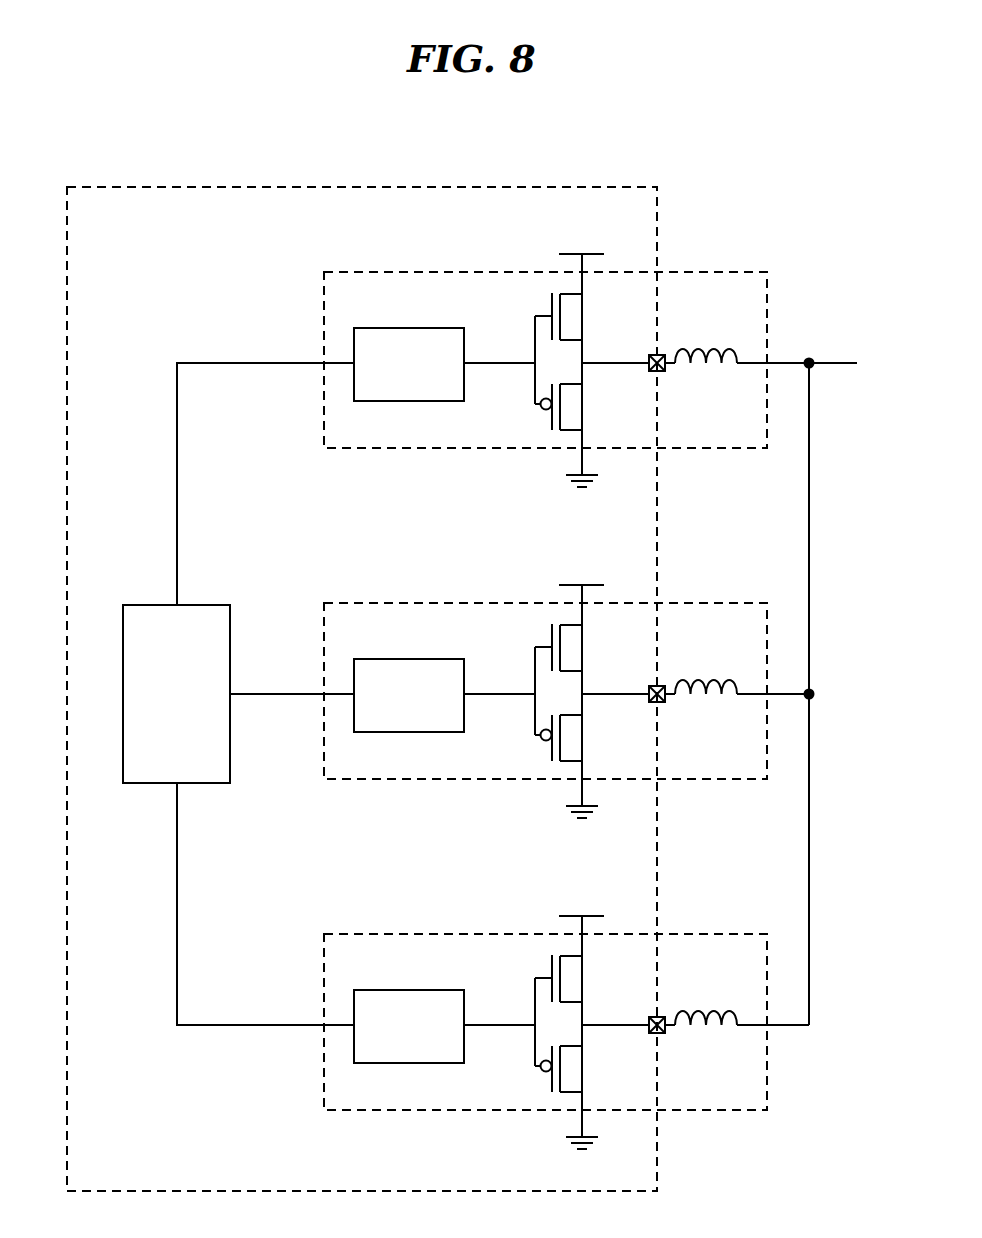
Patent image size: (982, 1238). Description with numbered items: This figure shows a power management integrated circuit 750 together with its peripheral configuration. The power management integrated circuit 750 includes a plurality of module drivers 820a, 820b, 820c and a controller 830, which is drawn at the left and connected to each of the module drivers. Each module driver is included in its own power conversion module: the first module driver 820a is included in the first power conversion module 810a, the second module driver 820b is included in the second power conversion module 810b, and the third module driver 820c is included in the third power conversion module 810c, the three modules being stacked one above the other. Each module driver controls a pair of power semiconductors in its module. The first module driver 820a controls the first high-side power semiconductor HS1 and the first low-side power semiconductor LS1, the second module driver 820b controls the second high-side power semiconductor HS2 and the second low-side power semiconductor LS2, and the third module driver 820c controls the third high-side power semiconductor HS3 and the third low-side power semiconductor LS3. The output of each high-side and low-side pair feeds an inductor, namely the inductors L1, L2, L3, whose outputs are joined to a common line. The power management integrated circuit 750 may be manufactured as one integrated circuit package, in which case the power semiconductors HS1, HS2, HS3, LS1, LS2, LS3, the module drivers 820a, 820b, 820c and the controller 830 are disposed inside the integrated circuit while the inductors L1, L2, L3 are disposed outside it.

The power management integrated circuit 750 is at (153, 243).
The first power conversion module 810a is at (437, 308).
The second power conversion module 810b is at (437, 639).
The third power conversion module 810c is at (437, 970).
The first module driver 820a is at (403, 401).
The second module driver 820b is at (403, 732).
The third module driver 820c is at (403, 1063).
The controller 830 is at (212, 783).
The first high-side power semiconductor HS1 is at (584, 316).
The second high-side power semiconductor HS2 is at (584, 647).
The third high-side power semiconductor HS3 is at (584, 978).
The first low-side power semiconductor LS1 is at (582, 407).
The second low-side power semiconductor LS2 is at (582, 738).
The third low-side power semiconductor LS3 is at (582, 1069).
The inductor L1 is at (737, 338).
The inductor L2 is at (737, 669).
The inductor L3 is at (737, 1000).